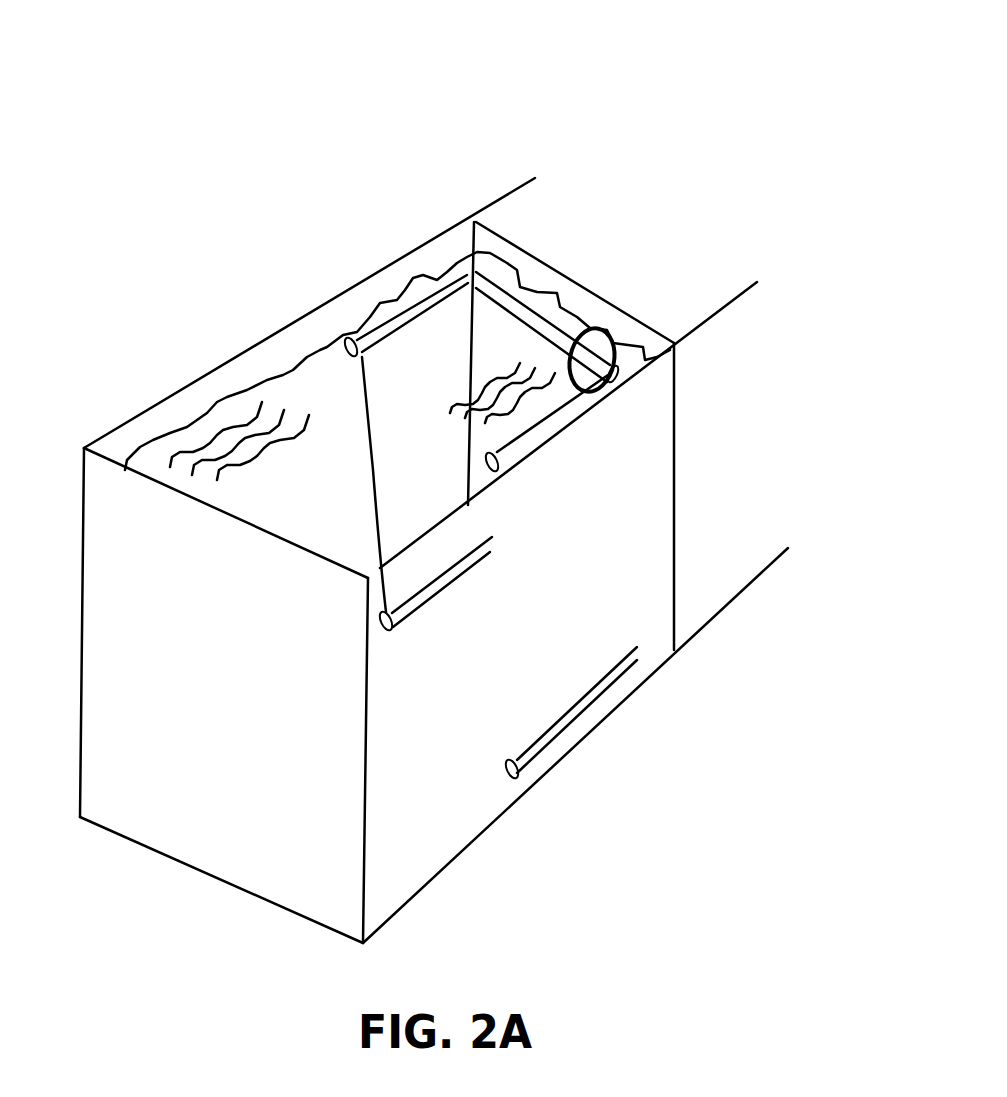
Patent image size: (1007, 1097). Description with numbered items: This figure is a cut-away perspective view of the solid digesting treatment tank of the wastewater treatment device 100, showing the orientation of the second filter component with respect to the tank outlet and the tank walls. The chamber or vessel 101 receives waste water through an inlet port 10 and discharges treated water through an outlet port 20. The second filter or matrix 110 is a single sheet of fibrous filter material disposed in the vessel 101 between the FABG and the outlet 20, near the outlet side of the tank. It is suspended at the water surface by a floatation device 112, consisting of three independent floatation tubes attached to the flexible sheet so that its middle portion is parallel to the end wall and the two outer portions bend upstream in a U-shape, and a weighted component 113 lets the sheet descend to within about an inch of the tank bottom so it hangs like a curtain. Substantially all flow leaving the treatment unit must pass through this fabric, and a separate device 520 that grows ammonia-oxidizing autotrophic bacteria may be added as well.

The wastewater treatment device 100 is at (240, 108).
The inlet port 10 is at (150, 546).
The chamber or vessel 101 is at (247, 345).
The floatation device 112 is at (362, 333).
The outlet port 20 is at (617, 333).
The second filter or matrix 110 is at (623, 600).
The weighted component 113 is at (603, 698).
The separate device 520 is at (585, 894).